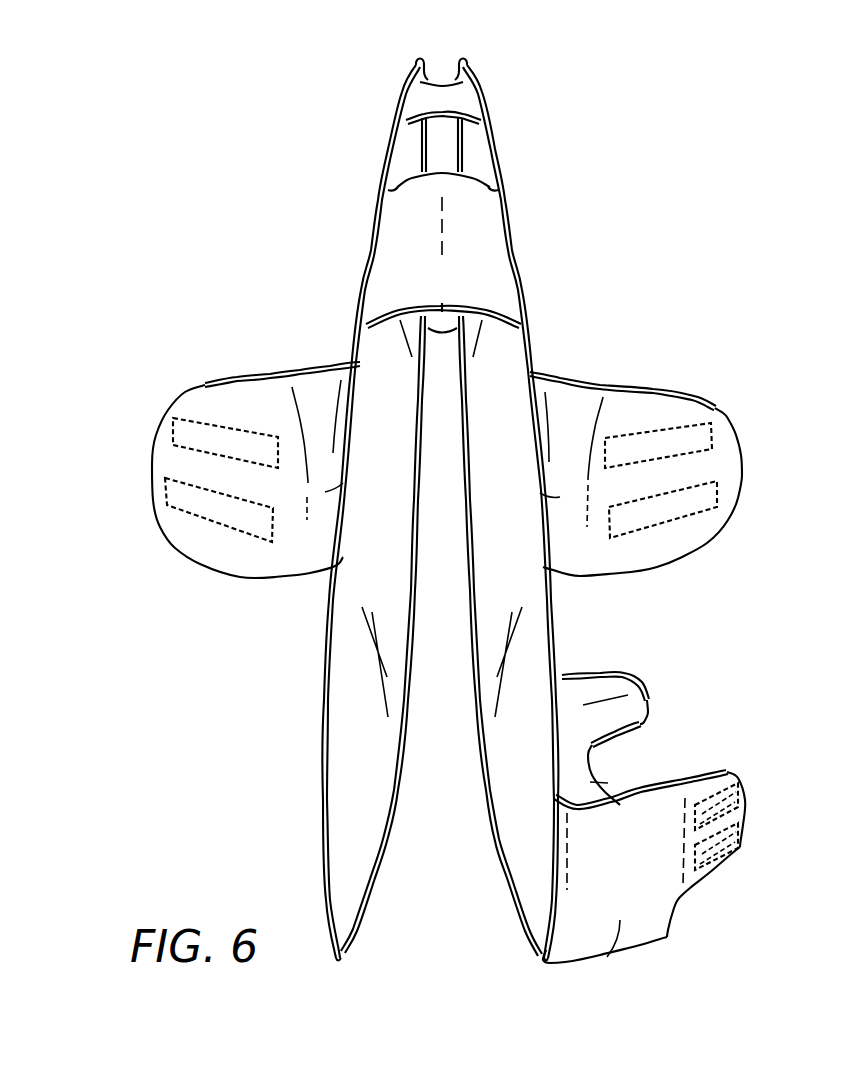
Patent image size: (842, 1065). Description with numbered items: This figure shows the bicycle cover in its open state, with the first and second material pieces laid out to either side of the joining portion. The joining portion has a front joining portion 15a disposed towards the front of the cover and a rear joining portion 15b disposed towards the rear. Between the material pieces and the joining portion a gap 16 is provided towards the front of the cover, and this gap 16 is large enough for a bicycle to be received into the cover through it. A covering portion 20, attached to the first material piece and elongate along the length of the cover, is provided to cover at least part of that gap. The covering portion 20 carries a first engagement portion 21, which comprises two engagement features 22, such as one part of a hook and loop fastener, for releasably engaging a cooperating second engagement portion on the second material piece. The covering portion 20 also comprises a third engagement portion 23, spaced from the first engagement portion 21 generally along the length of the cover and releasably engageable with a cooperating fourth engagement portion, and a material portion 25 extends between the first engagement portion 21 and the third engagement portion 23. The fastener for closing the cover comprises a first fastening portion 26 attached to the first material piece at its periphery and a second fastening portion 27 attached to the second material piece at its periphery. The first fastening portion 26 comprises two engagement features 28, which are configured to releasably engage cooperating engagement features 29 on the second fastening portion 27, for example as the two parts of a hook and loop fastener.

The front joining portion 15a is at (482, 232).
The rear joining portion 15b is at (465, 100).
The gap 16 is at (453, 908).
The covering portion 20 is at (653, 935).
The first engagement portion 21 is at (740, 777).
The engagement feature 22 is at (717, 853).
The third engagement portion 23 is at (643, 693).
The material portion 25 is at (605, 783).
The first fastening portion 26 is at (653, 383).
The second fastening portion 27 is at (217, 378).
The engagement feature 28 is at (713, 438).
The engagement feature 29 is at (173, 425).